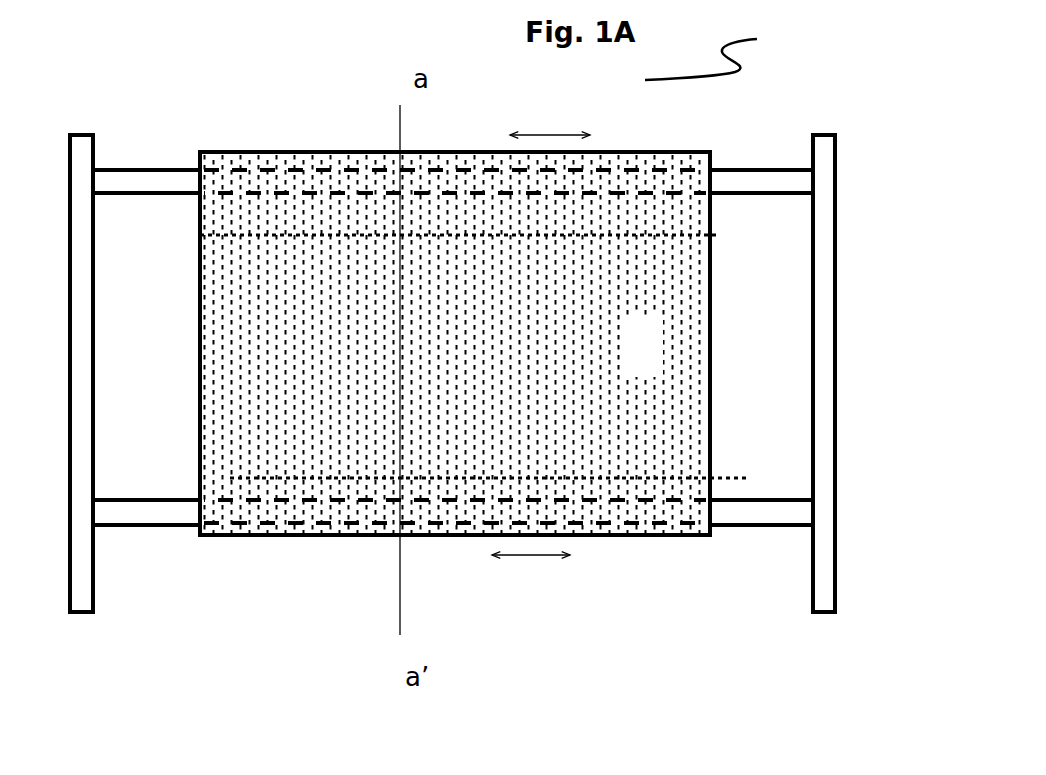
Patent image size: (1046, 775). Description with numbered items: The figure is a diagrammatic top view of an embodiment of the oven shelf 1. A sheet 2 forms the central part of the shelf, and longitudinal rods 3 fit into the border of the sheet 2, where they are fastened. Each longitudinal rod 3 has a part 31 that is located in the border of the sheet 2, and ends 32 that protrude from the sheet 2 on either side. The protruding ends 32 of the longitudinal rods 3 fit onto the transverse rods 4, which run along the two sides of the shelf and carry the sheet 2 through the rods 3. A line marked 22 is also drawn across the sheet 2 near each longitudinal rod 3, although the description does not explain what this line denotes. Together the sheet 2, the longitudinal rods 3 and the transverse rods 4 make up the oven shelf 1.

The oven shelf 1 is at (720, 49).
The sheet 2 is at (455, 343).
The longitudinal rods 3 is at (250, 172).
The part of longitudinal rod 31 is at (305, 172).
The connecting threads / separation line 22 is at (197, 232).
The ends of longitudinal rods 32 is at (145, 160).
The transverse rods 4 is at (63, 372).